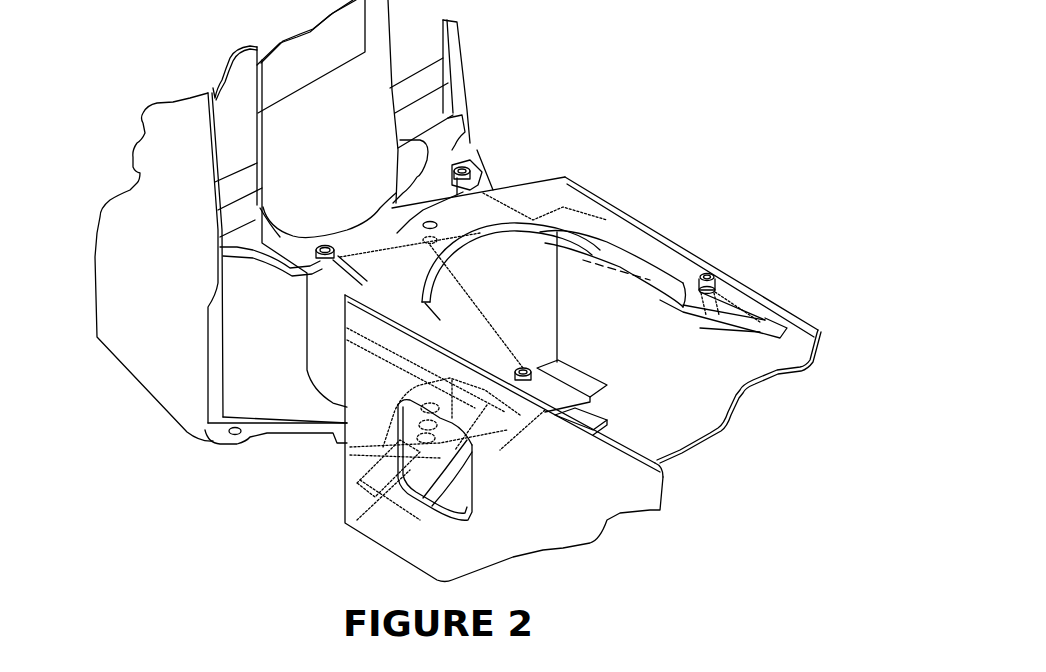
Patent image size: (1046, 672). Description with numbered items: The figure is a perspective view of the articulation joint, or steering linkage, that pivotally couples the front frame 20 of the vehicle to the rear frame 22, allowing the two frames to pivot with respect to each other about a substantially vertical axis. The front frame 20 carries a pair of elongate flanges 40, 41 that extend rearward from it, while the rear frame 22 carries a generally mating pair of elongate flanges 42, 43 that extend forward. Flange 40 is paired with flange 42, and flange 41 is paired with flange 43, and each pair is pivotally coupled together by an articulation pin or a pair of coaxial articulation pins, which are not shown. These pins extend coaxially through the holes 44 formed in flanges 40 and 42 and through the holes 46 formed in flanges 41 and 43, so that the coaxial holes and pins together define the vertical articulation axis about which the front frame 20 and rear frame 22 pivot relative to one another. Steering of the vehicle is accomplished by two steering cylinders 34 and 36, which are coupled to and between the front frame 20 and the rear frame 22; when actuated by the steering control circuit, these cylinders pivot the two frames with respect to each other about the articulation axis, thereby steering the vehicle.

The front frame 20 is at (153, 268).
The rear frame 22 is at (557, 509).
The steering cylinder 34 is at (440, 322).
The steering cylinder 36 is at (603, 109).
The elongate flange 40 is at (387, 247).
The elongate flange 41 is at (287, 443).
The elongate flange 42 is at (511, 274).
The elongate flange 43 is at (461, 496).
The holes 44 is at (463, 153).
The holes 46 is at (333, 463).